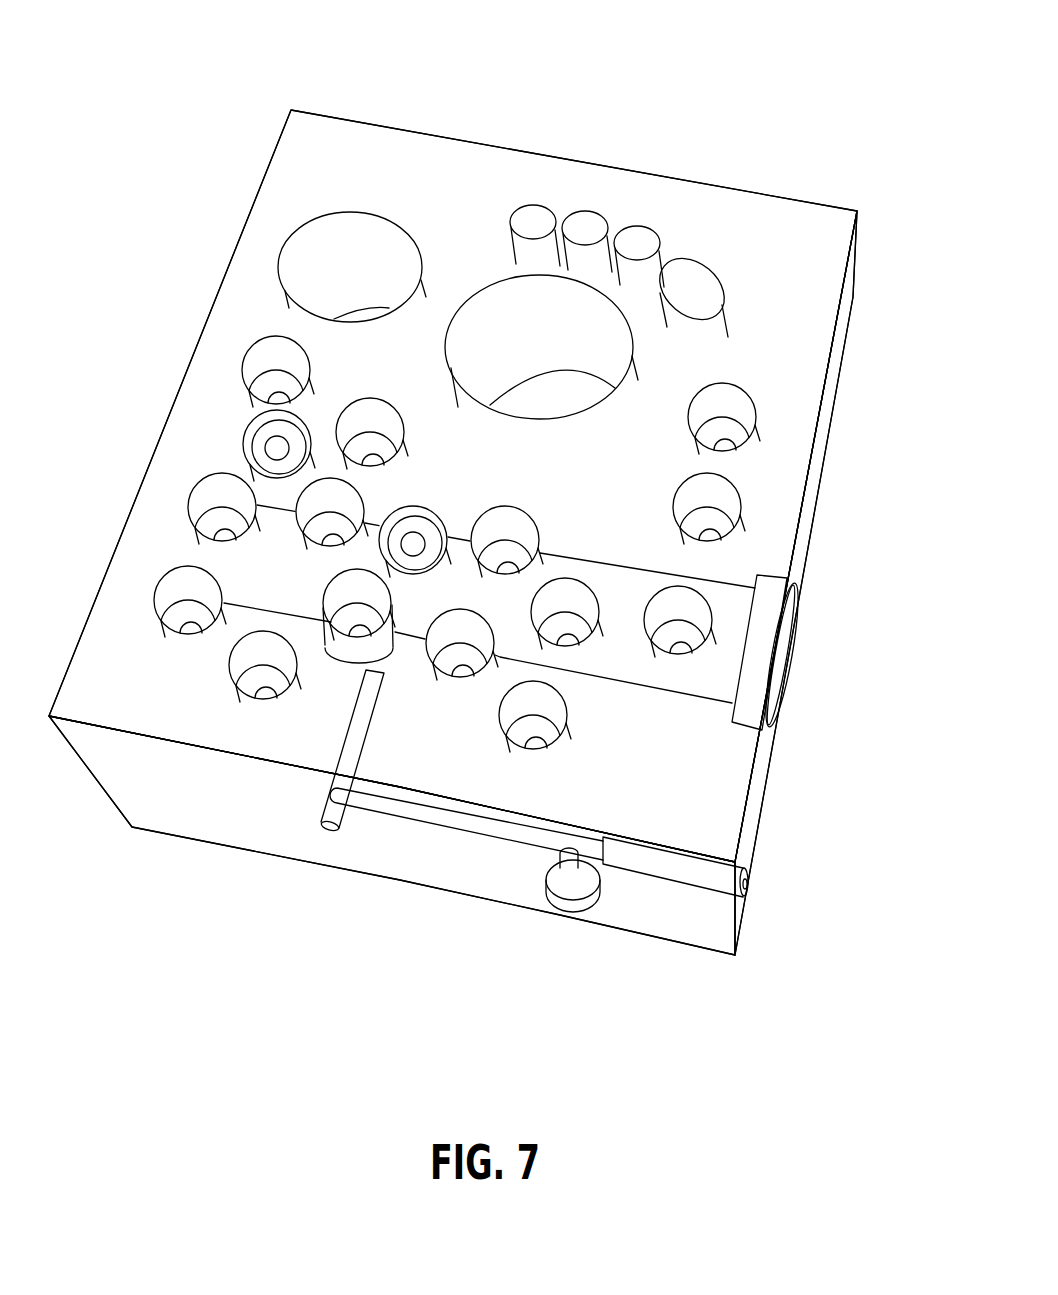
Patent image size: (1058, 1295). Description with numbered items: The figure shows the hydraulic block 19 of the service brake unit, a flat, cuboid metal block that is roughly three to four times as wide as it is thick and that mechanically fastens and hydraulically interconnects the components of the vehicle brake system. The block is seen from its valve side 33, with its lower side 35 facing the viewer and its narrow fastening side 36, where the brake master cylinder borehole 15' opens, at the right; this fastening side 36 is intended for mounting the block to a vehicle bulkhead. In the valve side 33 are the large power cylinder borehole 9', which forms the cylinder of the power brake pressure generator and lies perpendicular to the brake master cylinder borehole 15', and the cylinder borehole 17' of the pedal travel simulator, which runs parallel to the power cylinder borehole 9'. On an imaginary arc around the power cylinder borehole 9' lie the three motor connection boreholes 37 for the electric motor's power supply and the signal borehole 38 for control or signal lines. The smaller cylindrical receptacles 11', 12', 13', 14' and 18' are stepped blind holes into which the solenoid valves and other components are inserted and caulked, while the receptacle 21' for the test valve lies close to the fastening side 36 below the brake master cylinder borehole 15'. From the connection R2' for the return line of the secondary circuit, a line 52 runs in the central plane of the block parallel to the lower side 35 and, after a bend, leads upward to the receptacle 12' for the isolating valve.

The hydraulic block 19 is at (222, 130).
The valve side 33 is at (777, 241).
The lower side 35 is at (232, 812).
The fastening side 36 is at (828, 467).
The cylinder borehole 17' is at (352, 188).
The power cylinder borehole 9' is at (541, 302).
The motor connection boreholes 37 is at (635, 242).
The signal borehole 38 is at (697, 280).
The receptacle 18' is at (233, 337).
The receptacle 11' is at (619, 394).
The receptacle 14' is at (363, 505).
The receptacle 12' is at (486, 556).
The receptacle 13' is at (296, 668).
The receptacle 21' is at (762, 621).
The brake master cylinder borehole 15' is at (824, 652).
The line 52 is at (565, 867).
The connection R2' is at (577, 937).